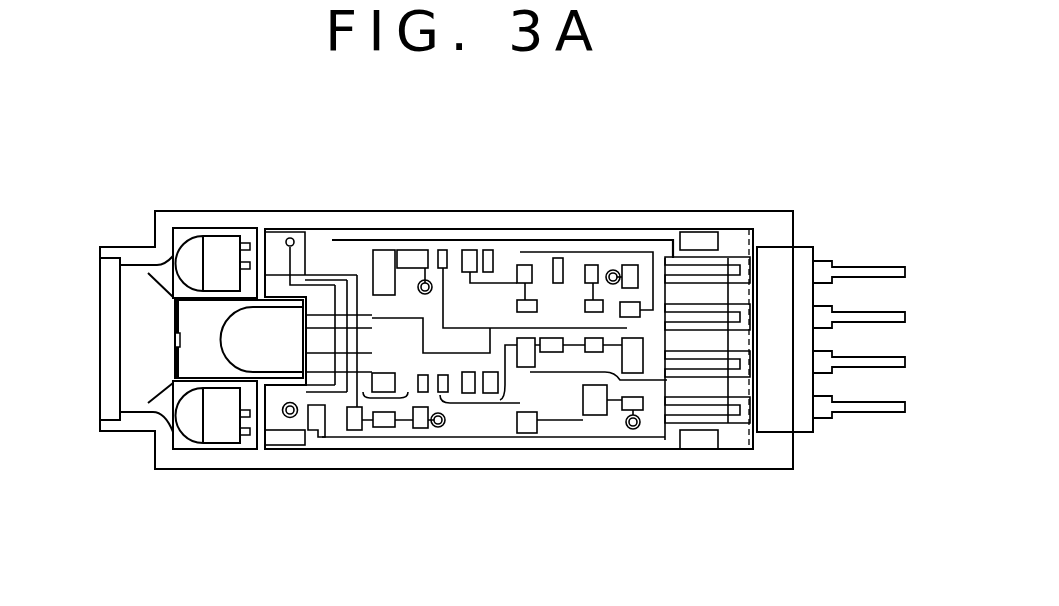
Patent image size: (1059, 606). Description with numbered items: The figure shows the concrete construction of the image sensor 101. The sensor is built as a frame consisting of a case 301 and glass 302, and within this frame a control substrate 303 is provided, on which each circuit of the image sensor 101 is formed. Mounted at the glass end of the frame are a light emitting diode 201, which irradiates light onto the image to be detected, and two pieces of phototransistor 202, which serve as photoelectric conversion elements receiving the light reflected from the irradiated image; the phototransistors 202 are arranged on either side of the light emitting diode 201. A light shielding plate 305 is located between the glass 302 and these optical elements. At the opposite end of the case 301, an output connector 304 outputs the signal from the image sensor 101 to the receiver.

The image sensor 101 is at (517, 163).
The light emitting diode 201 is at (315, 313).
The phototransistor 202 is at (223, 247).
The case 301 is at (427, 457).
The glass 302 is at (107, 368).
The control substrate 303 is at (490, 303).
The output connector 304 is at (805, 252).
The light shielding plate 305 is at (137, 287).